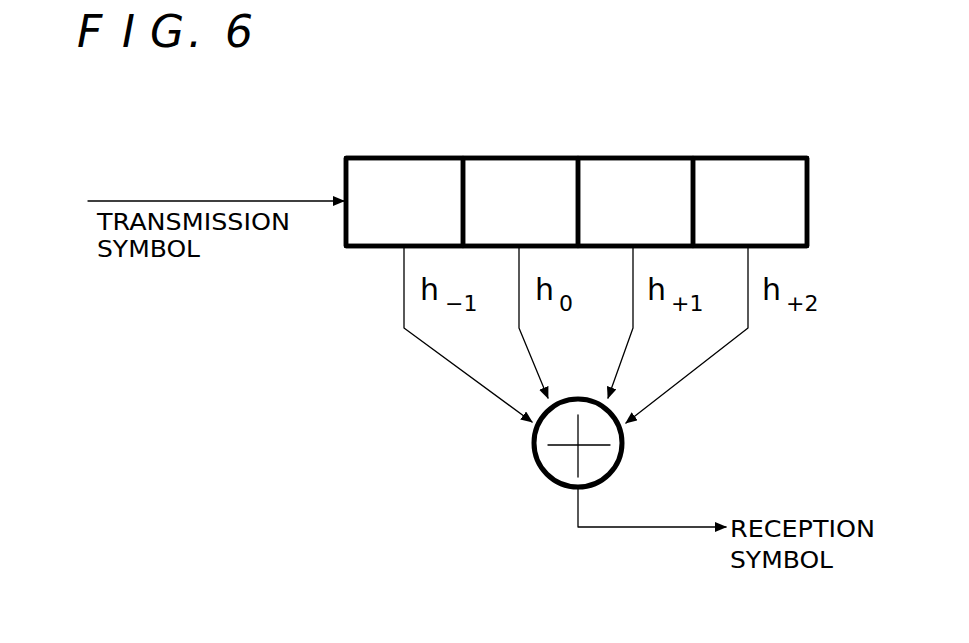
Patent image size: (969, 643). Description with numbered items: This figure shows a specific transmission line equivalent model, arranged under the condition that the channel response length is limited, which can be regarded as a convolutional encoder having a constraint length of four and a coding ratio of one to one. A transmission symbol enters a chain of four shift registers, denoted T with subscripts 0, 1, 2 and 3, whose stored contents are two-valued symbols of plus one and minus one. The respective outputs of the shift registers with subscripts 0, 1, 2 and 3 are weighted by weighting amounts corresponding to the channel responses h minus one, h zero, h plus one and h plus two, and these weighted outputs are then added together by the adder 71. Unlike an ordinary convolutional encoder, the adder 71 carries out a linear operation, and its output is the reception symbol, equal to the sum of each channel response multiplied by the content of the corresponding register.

The adder 71 is at (624, 445).
The transmission symbol register cell T0 0 is at (404, 202).
The transmission symbol register cell T1 1 is at (520, 202).
The transmission symbol register cell T2 2 is at (635, 202).
The transmission symbol register cell T3 3 is at (750, 202).